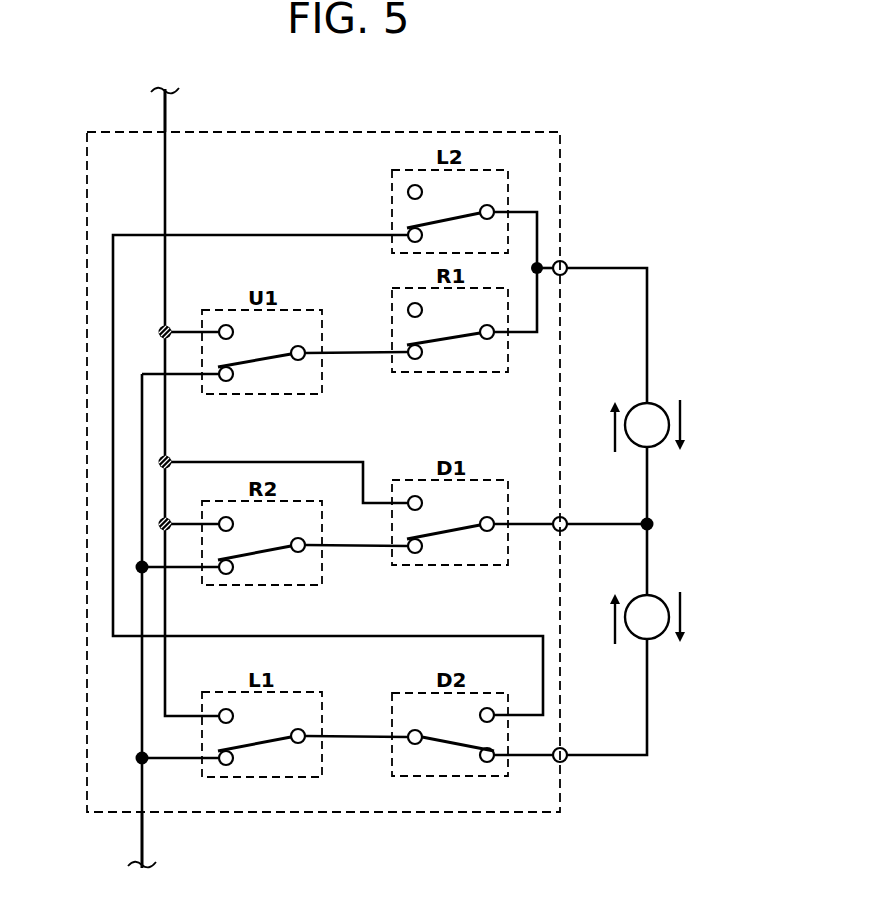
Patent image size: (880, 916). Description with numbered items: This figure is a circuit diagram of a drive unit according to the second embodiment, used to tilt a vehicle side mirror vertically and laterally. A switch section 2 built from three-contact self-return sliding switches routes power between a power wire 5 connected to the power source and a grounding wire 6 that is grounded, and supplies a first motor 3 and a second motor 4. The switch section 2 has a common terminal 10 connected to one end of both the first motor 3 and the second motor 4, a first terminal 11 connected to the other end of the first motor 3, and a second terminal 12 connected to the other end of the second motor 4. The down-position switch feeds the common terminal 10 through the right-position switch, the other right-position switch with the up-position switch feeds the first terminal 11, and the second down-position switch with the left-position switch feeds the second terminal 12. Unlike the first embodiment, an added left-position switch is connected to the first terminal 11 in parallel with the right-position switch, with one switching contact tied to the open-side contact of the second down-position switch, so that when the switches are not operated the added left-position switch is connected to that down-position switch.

The switch section 2 is at (490, 813).
The first motor 3 is at (655, 405).
The second motor 4 is at (655, 597).
The power wire 5 is at (165, 110).
The grounding wire 6 is at (142, 839).
The common terminal 10 is at (556, 517).
The first terminal 11 is at (566, 262).
The second terminal 12 is at (566, 762).